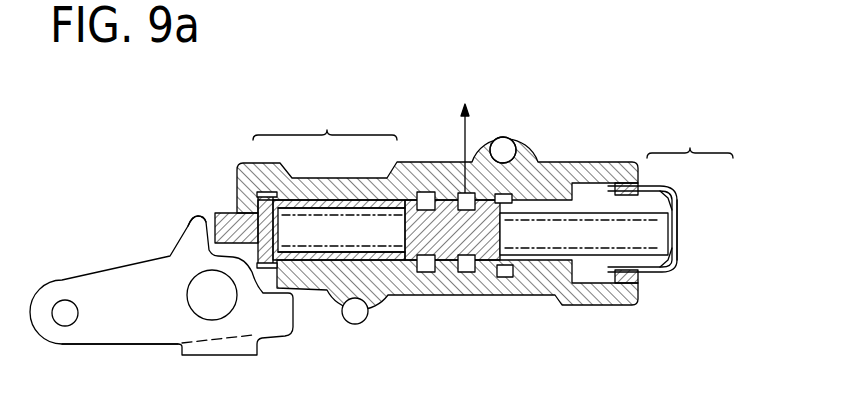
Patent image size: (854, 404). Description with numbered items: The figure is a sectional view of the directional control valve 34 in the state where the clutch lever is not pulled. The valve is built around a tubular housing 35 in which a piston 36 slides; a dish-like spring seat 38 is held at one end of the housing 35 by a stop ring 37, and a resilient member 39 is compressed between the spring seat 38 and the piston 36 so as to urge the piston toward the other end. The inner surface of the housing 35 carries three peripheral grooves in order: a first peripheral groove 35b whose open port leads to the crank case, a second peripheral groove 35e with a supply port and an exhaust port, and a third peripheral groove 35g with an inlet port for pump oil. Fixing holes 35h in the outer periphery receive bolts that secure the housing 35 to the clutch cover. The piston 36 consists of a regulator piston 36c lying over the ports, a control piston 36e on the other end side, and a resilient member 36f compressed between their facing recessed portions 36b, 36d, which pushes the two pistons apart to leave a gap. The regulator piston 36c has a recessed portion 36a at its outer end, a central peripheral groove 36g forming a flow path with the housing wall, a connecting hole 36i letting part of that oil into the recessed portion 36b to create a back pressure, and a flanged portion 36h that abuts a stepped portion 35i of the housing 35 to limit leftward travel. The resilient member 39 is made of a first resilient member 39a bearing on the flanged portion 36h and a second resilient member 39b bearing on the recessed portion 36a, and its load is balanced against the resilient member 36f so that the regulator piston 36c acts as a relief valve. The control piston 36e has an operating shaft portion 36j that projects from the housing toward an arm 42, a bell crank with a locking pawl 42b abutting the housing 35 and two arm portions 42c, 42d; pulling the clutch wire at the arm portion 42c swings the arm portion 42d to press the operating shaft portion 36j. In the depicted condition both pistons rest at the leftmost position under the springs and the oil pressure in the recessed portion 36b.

The directional control valve 34 is at (246, 165).
The housing 35 is at (600, 176).
The first peripheral groove 35b is at (508, 274).
The second peripheral groove 35e is at (466, 212).
The third peripheral groove 35g is at (425, 320).
The fixing hole 35h is at (502, 137).
The stepped portion 35i is at (548, 197).
The piston 36 is at (325, 123).
The recessed portion 36a is at (662, 237).
The recessed portion 36b is at (363, 244).
The regulator piston 36c is at (358, 204).
The recessed portion 36d is at (335, 248).
The control piston 36e is at (325, 204).
The resilient member 36f is at (297, 208).
The groove 36g is at (453, 262).
The flanged portion 36h is at (546, 214).
The connecting hole 36i is at (402, 249).
The operating shaft portion 36j is at (228, 212).
The stop ring 37 is at (628, 287).
The spring seat 38 is at (668, 265).
The resilient member 39 is at (690, 139).
The first resilient member 39a is at (661, 197).
The second resilient member 39b is at (667, 212).
The arm 42 is at (100, 283).
The locking pawl 42b is at (278, 318).
The arm portion 42c is at (85, 336).
The arm portion 42d is at (188, 226).